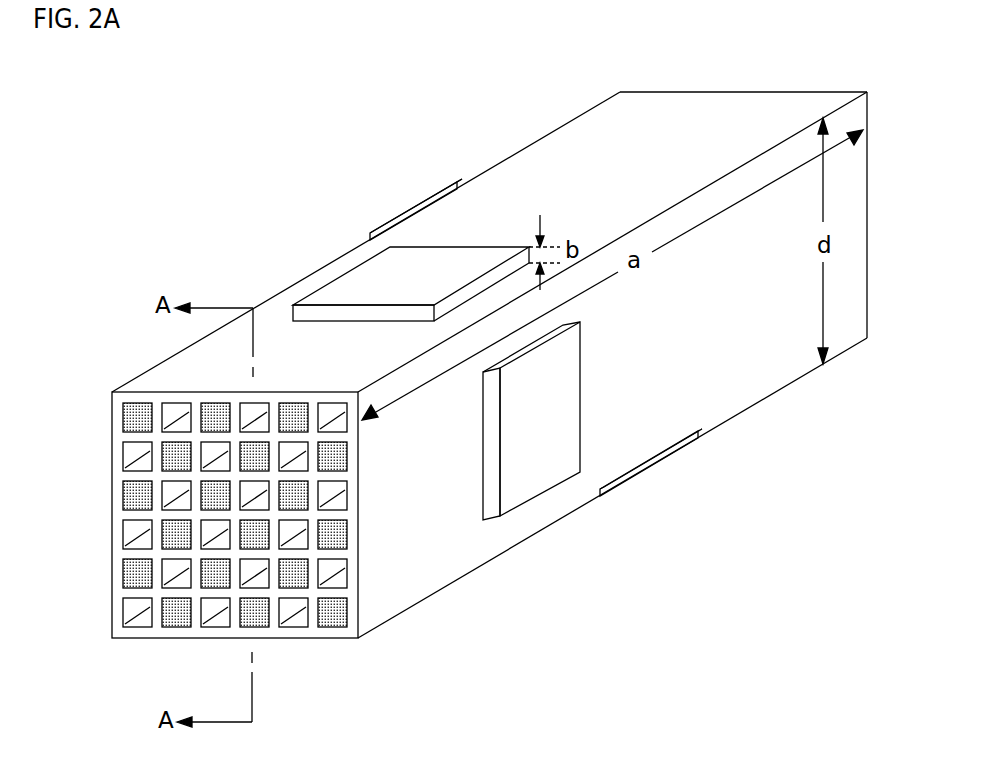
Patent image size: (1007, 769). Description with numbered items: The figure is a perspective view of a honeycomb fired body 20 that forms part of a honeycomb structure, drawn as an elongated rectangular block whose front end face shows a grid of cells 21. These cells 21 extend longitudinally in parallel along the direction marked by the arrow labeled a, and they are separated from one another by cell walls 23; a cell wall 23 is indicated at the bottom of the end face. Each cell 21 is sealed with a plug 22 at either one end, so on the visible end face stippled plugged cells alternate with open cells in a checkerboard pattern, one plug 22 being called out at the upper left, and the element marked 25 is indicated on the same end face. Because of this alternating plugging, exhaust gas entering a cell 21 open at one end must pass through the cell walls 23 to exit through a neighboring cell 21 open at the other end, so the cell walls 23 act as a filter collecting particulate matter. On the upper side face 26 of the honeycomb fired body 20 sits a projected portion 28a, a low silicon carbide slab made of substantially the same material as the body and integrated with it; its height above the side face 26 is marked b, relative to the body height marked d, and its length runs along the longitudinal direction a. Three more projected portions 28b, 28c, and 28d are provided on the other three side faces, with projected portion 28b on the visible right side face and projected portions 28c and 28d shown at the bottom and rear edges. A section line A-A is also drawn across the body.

The honeycomb fired body 20 is at (318, 214).
The cell 21 is at (140, 612).
The plug 22 is at (138, 413).
The cell wall 23 is at (293, 592).
The column element 25 is at (157, 555).
The side face 26 is at (697, 112).
The projected portion 28a is at (348, 287).
The projected portion 28b is at (538, 463).
The projected portion 28c is at (637, 480).
The projected portion 28d is at (422, 208).